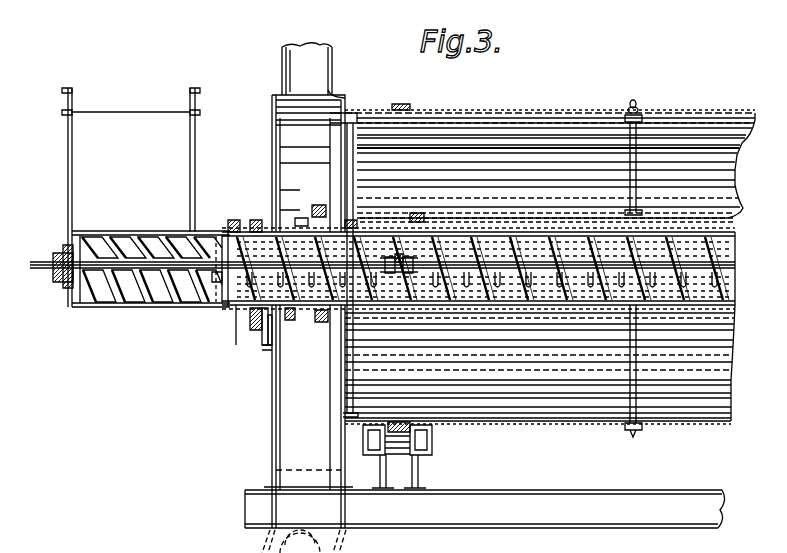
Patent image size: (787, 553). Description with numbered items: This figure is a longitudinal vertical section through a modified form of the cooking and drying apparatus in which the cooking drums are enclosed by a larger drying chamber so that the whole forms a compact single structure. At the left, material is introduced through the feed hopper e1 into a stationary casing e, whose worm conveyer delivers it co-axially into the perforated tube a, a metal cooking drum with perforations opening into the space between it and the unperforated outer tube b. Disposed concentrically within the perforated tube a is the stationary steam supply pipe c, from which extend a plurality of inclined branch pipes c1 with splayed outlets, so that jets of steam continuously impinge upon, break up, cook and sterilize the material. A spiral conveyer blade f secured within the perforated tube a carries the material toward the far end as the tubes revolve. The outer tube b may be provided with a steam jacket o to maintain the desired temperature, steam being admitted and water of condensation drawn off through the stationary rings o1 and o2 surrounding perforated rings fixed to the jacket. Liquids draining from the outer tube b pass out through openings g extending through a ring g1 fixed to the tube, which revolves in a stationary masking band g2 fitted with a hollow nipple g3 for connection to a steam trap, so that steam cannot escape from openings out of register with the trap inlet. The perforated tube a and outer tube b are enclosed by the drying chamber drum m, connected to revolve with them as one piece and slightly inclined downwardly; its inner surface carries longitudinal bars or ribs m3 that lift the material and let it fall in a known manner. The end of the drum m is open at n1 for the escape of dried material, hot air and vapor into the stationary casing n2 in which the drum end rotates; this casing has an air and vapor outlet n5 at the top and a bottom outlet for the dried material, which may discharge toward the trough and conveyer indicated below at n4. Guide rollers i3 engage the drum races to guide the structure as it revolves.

The longitudinal bars or ribs m3 is at (678, 135).
The drying chamber drum m is at (464, 113).
The air and vapor outlet n5 is at (312, 65).
The stationary casing n2 is at (272, 142).
The open end of drum n1 is at (340, 375).
The pivot n4 is at (320, 552).
The guide rollers i3 is at (418, 464).
The feed hopper e1 is at (131, 197).
The stationary casing e is at (120, 303).
The spiral conveyer blade f is at (88, 232).
The steam supply pipe c is at (46, 272).
The branch pipes c1 is at (216, 278).
The perforated tube a is at (253, 318).
The outer tube b is at (237, 222).
The steam jacket o is at (357, 222).
The stationary ring o1 is at (418, 213).
The stationary ring o2 is at (318, 205).
The openings g is at (256, 345).
The ring g1 is at (265, 178).
The masking band g2 is at (250, 320).
The hollow nipple g3 is at (262, 332).